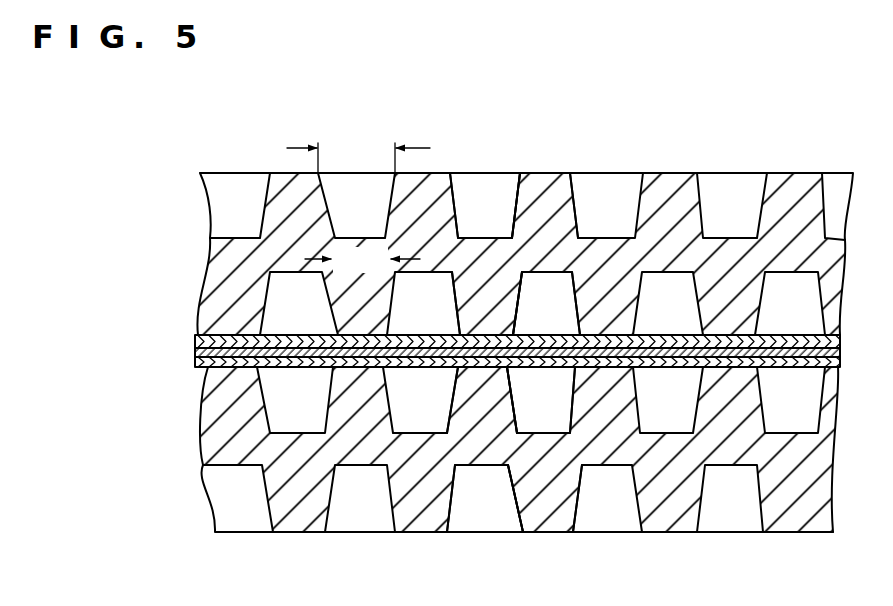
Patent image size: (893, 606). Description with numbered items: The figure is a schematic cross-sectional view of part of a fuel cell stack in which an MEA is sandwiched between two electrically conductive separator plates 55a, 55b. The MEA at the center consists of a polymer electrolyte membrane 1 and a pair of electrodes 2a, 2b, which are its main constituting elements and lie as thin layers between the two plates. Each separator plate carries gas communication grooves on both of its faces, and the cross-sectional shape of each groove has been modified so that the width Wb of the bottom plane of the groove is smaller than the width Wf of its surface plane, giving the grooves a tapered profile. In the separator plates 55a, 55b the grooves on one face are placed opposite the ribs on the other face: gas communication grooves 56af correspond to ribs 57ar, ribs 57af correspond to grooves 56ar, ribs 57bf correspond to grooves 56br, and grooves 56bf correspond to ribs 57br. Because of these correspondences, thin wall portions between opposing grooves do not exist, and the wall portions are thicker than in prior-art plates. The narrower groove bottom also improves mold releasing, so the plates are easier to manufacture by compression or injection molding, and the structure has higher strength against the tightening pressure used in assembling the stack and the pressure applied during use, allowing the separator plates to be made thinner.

The polymer electrolyte membrane 1 is at (196, 350).
The electrode 2a is at (198, 338).
The electrode 2b is at (198, 360).
The electrically conductive separator plate 55a is at (208, 278).
The electrically conductive separator plate 55b is at (199, 396).
The gas communication groove 56af is at (500, 190).
The gas communication groove 56ar is at (545, 300).
The rib 57af is at (545, 190).
The rib 57ar is at (485, 313).
The gas communication groove 56bf is at (552, 413).
The gas communication groove 56br is at (492, 510).
The rib 57bf is at (492, 403).
The rib 57br is at (545, 513).
The width of surface plane of groove Wf is at (358, 148).
The width of bottom plane of groove Wb is at (362, 260).